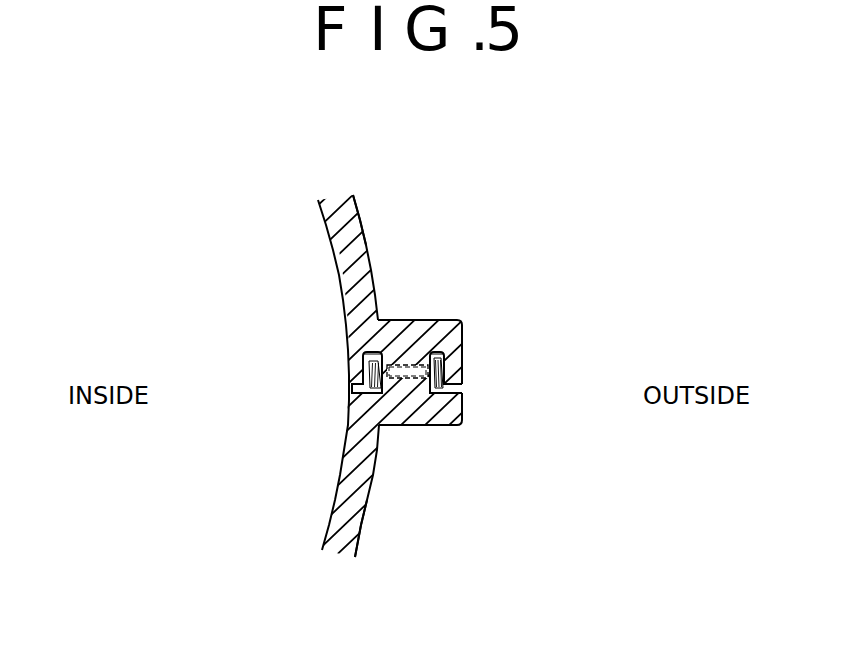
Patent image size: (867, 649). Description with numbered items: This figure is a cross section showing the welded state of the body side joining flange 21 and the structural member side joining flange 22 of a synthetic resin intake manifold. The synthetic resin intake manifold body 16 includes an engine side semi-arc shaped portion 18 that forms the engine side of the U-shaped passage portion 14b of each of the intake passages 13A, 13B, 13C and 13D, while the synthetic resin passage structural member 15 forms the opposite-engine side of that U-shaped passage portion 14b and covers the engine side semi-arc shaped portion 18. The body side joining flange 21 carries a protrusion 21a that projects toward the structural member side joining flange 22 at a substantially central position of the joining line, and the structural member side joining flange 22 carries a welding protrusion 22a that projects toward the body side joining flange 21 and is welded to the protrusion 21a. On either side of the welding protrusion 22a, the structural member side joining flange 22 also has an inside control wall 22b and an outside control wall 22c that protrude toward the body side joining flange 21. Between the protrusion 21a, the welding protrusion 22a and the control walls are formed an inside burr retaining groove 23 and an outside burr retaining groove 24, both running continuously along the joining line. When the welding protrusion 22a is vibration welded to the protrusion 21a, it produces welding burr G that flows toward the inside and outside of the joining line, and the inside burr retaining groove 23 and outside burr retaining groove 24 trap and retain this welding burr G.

The intake passage 13A is at (513, 377).
The intake passage 13B is at (513, 377).
The intake passage 13C is at (513, 377).
The intake passage 13D is at (348, 446).
The U-shaped passage portion 14b is at (357, 196).
The synthetic resin passage structural member 15 is at (362, 214).
The synthetic resin intake manifold body 16 is at (360, 537).
The engine side semi-arc shaped portion 18 is at (335, 552).
The body side joining flange 21 is at (446, 426).
The protrusion 21a is at (408, 368).
The structural member side joining flange 22 is at (402, 369).
The welding protrusion 22a is at (405, 383).
The inside control wall 22b is at (354, 390).
The outside control wall 22c is at (464, 380).
The inside burr retaining groove 23 is at (364, 353).
The outside burr retaining groove 24 is at (447, 357).
The welding burr G is at (350, 370).